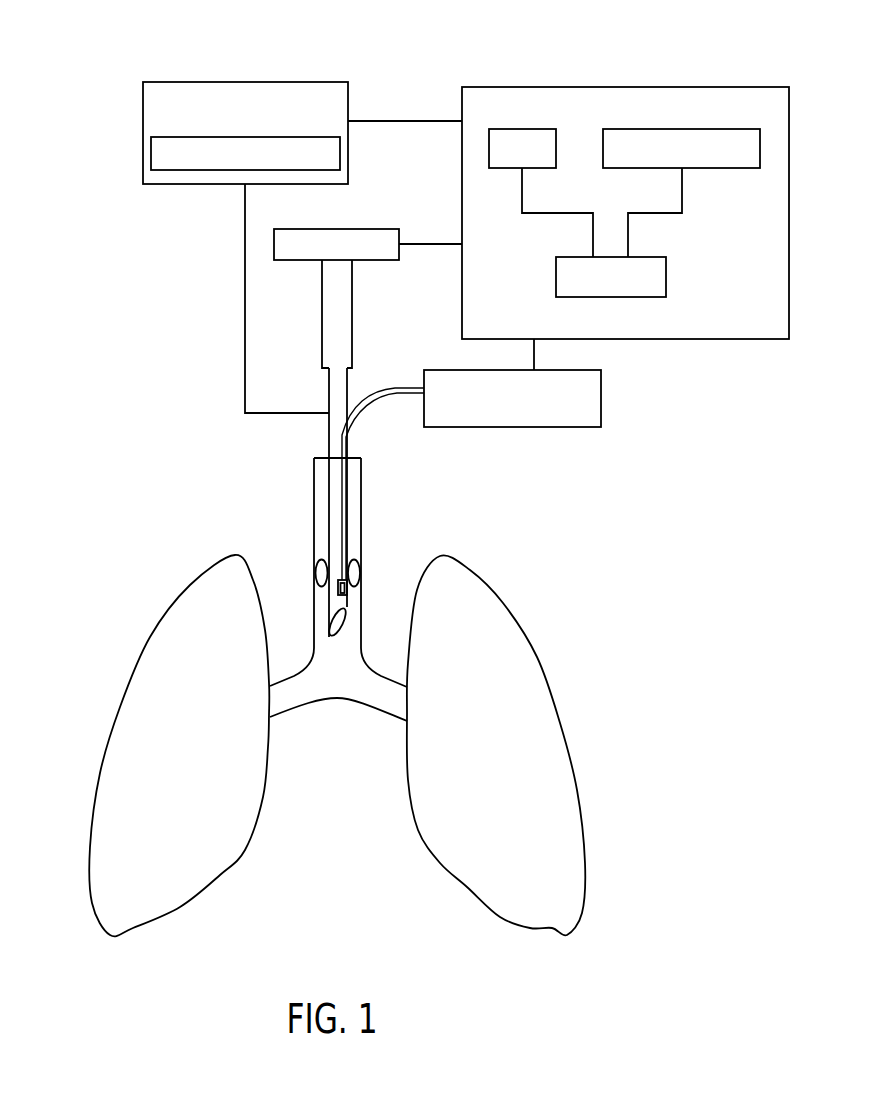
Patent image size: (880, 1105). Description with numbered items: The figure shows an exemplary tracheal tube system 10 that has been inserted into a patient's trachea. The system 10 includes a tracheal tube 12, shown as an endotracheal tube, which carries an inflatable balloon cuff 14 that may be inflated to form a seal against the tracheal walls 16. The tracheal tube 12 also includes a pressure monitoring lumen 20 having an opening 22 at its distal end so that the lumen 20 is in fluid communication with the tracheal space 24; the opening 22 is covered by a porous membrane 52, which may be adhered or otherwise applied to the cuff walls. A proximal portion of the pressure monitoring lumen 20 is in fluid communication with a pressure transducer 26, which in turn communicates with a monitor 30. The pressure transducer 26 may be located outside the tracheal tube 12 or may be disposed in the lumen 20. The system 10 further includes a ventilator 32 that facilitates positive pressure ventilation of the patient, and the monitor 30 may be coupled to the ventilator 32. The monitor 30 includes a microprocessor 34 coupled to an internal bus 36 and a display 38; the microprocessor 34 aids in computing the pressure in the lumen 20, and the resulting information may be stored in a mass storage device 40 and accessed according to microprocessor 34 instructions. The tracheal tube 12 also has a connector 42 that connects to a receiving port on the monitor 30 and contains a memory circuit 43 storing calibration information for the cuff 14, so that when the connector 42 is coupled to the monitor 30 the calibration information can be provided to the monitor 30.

The tracheal tube system 10 is at (125, 85).
The tracheal tube 12 is at (336, 457).
The inflatable balloon cuff 14 is at (353, 566).
The tracheal walls 16 is at (314, 487).
The pressure monitoring lumen 20 is at (389, 390).
The opening 22 is at (348, 590).
The tracheal space 24 is at (331, 685).
The pressure transducer 26 is at (511, 427).
The monitor 30 is at (627, 87).
The ventilator 32 is at (335, 229).
The microprocessor 34 is at (500, 168).
The internal bus 36 is at (535, 213).
The display 38 is at (666, 278).
The mass storage device 40 is at (738, 168).
The connector 42 is at (243, 82).
The memory circuit 43 is at (151, 153).
The porous membrane 52 is at (339, 584).